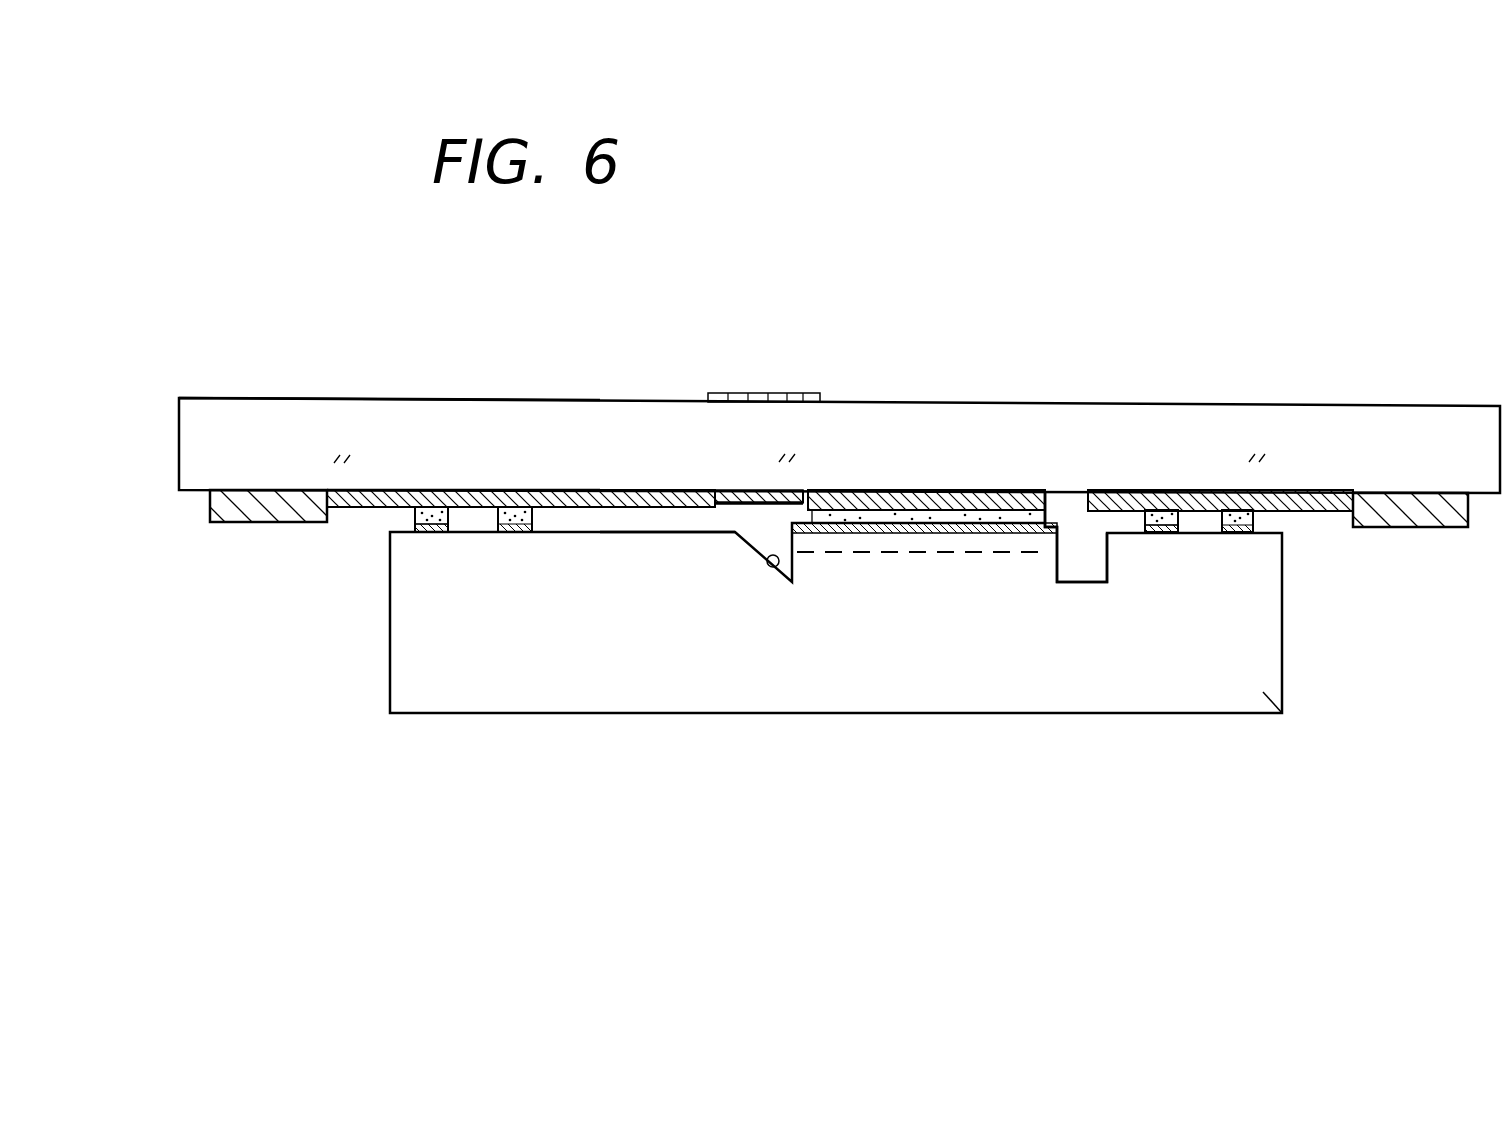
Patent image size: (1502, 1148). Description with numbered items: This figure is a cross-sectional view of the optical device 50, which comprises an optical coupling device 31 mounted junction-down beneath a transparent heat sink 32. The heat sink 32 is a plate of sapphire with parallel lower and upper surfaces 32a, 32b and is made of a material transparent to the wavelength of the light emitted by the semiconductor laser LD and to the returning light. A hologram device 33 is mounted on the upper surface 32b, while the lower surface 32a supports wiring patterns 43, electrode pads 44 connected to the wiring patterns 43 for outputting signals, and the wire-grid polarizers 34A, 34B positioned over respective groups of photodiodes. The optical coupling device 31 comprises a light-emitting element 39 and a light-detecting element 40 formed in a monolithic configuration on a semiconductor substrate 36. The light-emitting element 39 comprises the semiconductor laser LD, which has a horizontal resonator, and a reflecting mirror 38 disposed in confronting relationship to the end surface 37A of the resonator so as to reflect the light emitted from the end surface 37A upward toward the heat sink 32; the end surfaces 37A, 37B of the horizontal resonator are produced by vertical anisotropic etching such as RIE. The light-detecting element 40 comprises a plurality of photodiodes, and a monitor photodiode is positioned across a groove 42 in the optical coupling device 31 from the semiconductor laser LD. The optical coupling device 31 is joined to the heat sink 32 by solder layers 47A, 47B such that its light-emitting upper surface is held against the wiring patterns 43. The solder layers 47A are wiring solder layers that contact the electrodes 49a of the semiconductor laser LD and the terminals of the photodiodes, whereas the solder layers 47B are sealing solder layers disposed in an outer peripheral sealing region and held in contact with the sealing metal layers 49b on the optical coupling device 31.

The optical module 50 is at (250, 312).
The optical coupling device 31 is at (1282, 712).
The heat sink 32 is at (1244, 415).
The lower surface 32a is at (347, 512).
The upper surface 32b is at (285, 392).
The hologram device 33 is at (778, 393).
The polarizer 34A is at (773, 495).
The polarizer 34B is at (894, 391).
The semiconductor substrate 36 is at (585, 688).
The end surface 37A is at (772, 543).
The end surface 37B is at (1075, 562).
The reflecting mirror 38 is at (777, 568).
The light-emitting element 39 is at (873, 778).
The semiconductor laser LD is at (850, 553).
The light-detecting element 40 is at (680, 515).
The groove 42 is at (1083, 546).
The wiring patterns 43 is at (371, 492).
The electrode pads 44 is at (236, 508).
The wiring solder layers 47A is at (492, 532).
The sealing solder layers 47B is at (417, 518).
The electrodes 49a is at (525, 533).
The sealing metal layers 49b is at (433, 535).